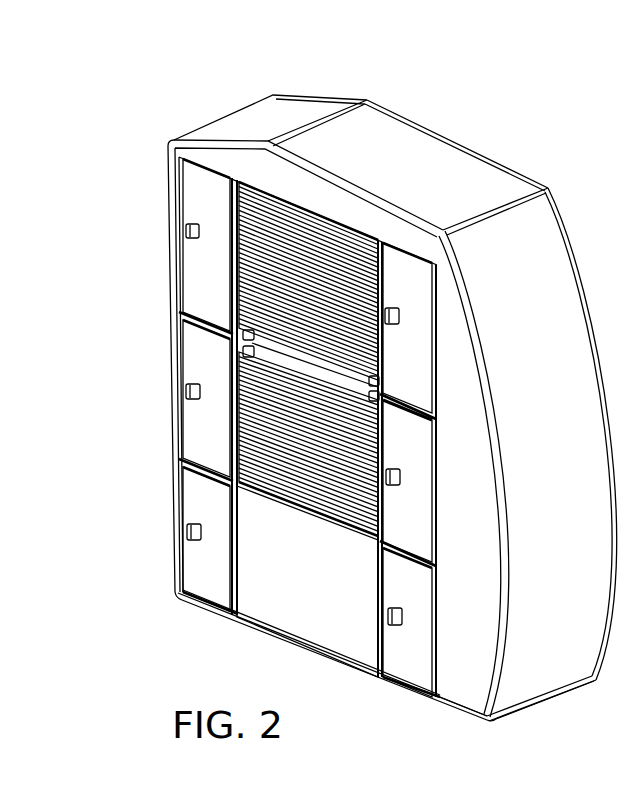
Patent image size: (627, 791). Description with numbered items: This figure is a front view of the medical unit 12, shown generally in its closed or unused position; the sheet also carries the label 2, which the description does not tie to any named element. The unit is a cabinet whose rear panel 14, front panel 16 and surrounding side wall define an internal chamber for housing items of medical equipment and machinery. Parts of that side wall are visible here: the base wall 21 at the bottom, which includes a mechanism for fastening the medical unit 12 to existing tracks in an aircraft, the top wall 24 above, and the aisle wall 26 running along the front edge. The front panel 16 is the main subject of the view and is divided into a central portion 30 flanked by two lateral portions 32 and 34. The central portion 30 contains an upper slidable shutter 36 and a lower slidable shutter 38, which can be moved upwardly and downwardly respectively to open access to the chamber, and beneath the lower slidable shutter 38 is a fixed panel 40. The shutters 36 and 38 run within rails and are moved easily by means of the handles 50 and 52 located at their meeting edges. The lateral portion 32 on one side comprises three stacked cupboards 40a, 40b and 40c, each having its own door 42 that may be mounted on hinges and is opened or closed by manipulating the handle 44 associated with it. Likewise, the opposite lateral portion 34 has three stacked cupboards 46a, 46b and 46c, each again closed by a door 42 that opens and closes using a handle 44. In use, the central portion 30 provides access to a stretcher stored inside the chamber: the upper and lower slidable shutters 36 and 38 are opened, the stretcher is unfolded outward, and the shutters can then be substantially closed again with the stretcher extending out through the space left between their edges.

The storage system 2 is at (573, 333).
The medical unit 12 is at (142, 77).
The rear panel 14 is at (560, 224).
The front panel 16 is at (492, 563).
The base wall 21 is at (455, 713).
The top wall 24 is at (402, 130).
The aisle wall 26 is at (166, 190).
The central portion 30 is at (290, 622).
The lateral portion 32 is at (203, 608).
The lateral portion 34 is at (468, 688).
The upper slidable shutter 36 is at (347, 247).
The lower slidable shutter 38 is at (280, 490).
The fixed panel 40 is at (351, 650).
The cupboard 40a is at (190, 505).
The cupboard 40b is at (183, 432).
The cupboard 40c is at (185, 297).
The door 42 is at (190, 260).
The handle 44 is at (188, 383).
The cupboard 46a is at (438, 609).
The cupboard 46b is at (436, 440).
The cupboard 46c is at (434, 299).
The handle 50 is at (380, 378).
The handle 52 is at (382, 396).